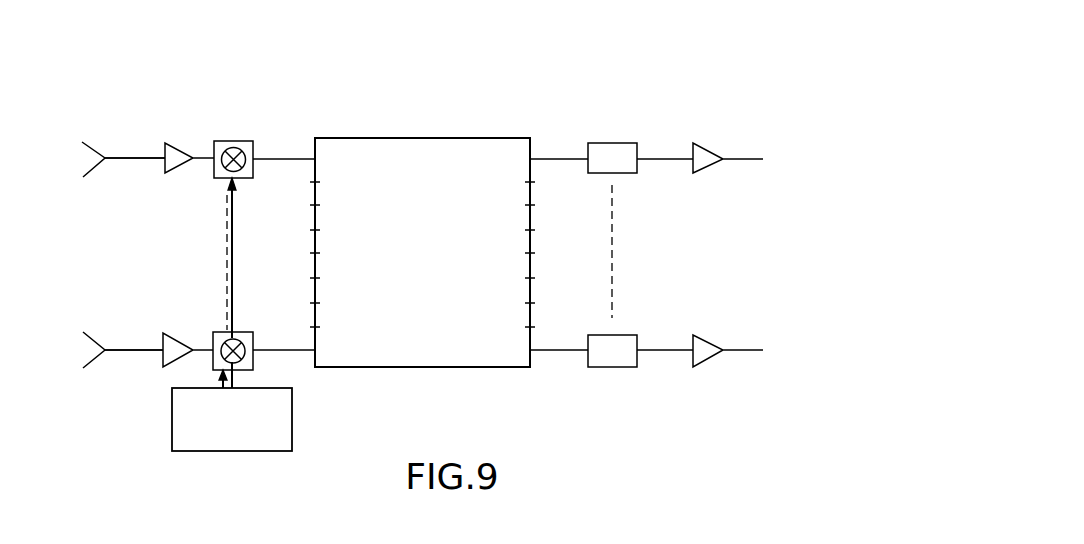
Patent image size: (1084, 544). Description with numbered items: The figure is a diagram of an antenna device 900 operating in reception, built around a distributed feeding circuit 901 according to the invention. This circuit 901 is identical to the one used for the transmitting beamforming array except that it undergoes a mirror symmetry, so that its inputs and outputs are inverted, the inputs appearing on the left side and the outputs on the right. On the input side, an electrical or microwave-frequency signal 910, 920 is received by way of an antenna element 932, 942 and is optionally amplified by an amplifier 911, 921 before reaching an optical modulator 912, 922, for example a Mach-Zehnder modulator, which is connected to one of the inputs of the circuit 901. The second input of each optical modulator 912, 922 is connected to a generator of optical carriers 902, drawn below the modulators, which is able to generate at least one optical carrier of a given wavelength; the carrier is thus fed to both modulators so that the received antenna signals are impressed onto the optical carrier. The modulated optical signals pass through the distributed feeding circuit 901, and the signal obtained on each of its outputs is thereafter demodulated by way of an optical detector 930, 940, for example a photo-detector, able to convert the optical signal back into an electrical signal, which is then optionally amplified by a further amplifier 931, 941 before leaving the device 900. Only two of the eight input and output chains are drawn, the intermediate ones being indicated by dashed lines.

The antenna device 900 is at (655, 60).
The distributed feeding circuit 901 is at (402, 258).
The generator of optical carriers 902 is at (212, 430).
The electrical or microwave-frequency signal 910 is at (142, 157).
The amplifier 911 is at (188, 150).
The optical modulator 912 is at (237, 141).
The electrical or microwave-frequency signal 920 is at (134, 349).
The amplifier 921 is at (184, 334).
The optical modulator 922 is at (243, 332).
The optical detector 930 is at (612, 142).
The amplifier 931 is at (712, 153).
The antenna element 932 is at (83, 140).
The optical detector 940 is at (608, 367).
The amplifier 941 is at (710, 360).
The antenna element 942 is at (84, 332).